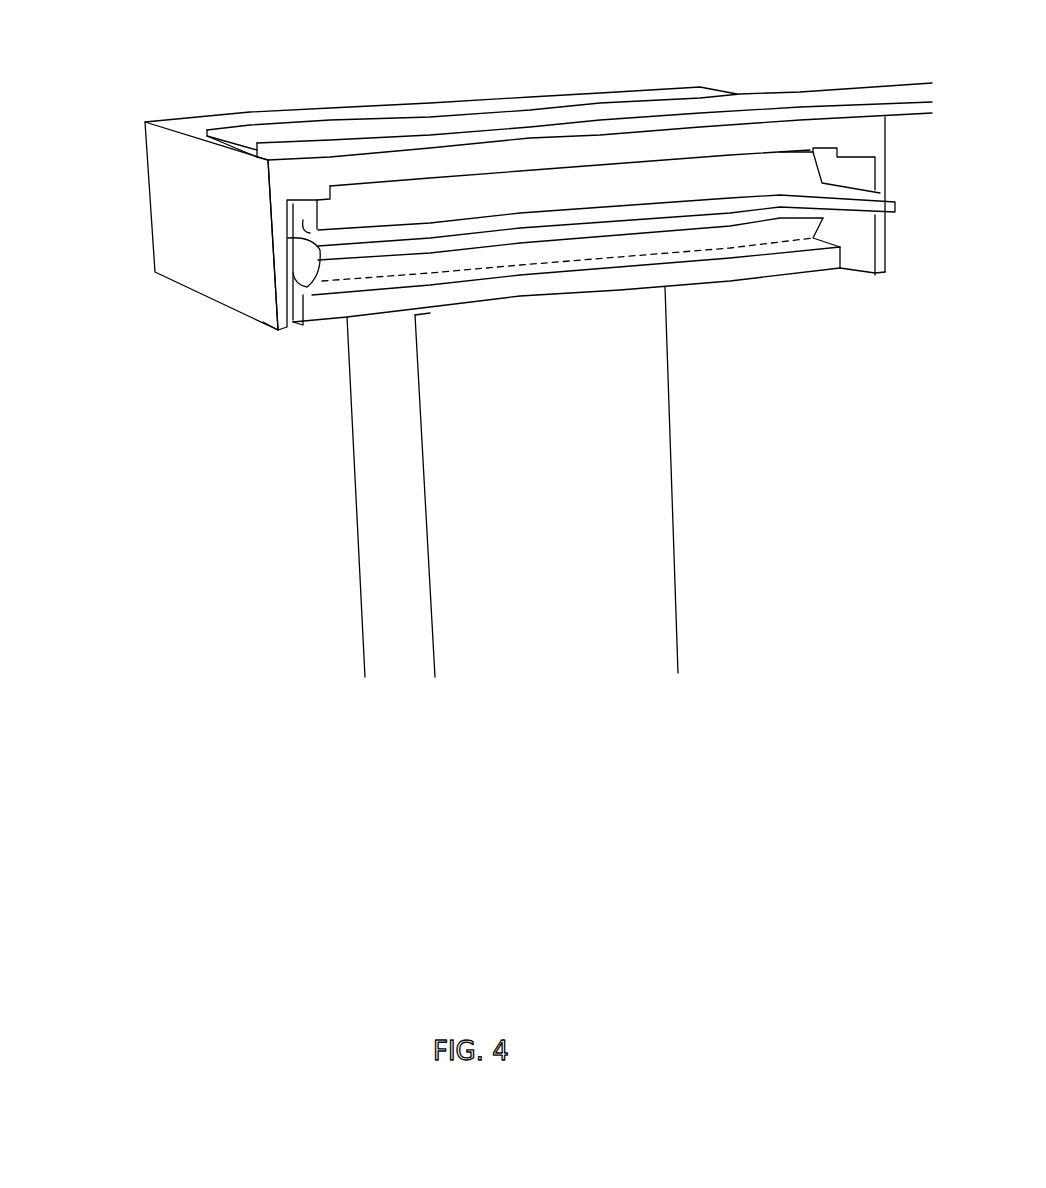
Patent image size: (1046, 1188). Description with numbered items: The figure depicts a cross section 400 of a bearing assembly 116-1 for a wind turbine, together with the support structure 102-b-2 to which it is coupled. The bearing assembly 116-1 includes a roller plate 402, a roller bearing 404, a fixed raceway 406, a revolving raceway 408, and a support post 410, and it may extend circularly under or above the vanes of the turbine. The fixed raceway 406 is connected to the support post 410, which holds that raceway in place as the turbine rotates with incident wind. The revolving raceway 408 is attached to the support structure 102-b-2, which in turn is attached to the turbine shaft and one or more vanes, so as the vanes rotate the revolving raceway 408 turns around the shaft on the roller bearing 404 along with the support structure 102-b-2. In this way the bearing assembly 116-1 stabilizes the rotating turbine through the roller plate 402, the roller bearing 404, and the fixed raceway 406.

The cross section 400 is at (783, 733).
The support structure 102-b-2 is at (778, 96).
The bearing assembly 116-1 is at (132, 148).
The roller plate 402 is at (895, 206).
The roller bearing 404 is at (413, 192).
The fixed raceway 406 is at (595, 278).
The revolving raceway 408 is at (195, 263).
The support post 410 is at (647, 465).